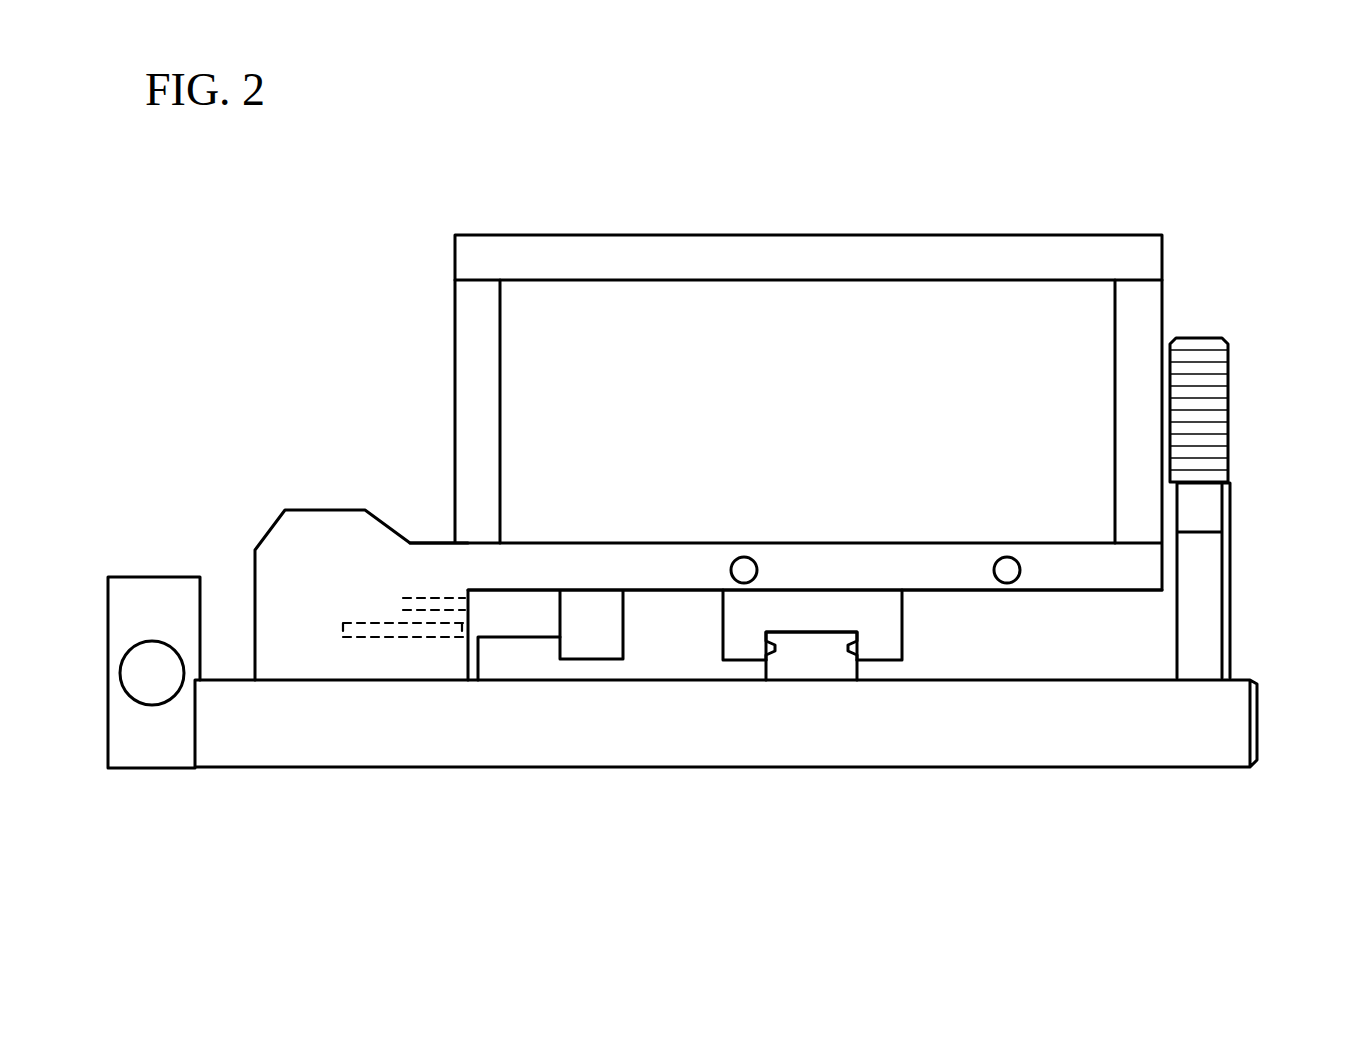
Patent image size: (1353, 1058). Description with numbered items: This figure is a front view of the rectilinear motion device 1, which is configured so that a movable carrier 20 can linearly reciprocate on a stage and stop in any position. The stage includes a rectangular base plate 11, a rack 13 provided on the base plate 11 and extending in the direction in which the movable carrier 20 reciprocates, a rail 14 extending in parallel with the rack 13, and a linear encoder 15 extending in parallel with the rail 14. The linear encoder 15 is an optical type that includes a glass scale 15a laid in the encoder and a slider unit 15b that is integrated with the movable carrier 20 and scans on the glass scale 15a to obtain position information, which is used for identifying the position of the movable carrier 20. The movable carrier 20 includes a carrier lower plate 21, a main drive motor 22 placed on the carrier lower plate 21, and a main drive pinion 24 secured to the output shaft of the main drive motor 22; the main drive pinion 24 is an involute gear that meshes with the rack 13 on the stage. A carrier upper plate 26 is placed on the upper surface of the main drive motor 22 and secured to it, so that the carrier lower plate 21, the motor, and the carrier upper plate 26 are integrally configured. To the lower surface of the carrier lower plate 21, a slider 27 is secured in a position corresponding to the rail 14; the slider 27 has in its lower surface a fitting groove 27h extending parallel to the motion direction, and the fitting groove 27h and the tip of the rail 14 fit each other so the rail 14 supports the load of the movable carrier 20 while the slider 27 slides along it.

The rectilinear motion device 1 is at (786, 473).
The base plate 11 is at (1258, 718).
The rack 13 is at (1232, 505).
The rail 14 is at (763, 666).
The linear encoder 15 is at (307, 508).
The glass scale 15a is at (393, 637).
The slider unit 15b is at (442, 598).
The movable carrier 20 is at (786, 493).
The carrier lower plate 21 is at (1123, 592).
The main drive motor 22 is at (977, 508).
The main drive pinion 24 is at (1203, 337).
The carrier upper plate 26 is at (1080, 233).
The slider 27 is at (727, 620).
The fitting groove 27h is at (773, 636).